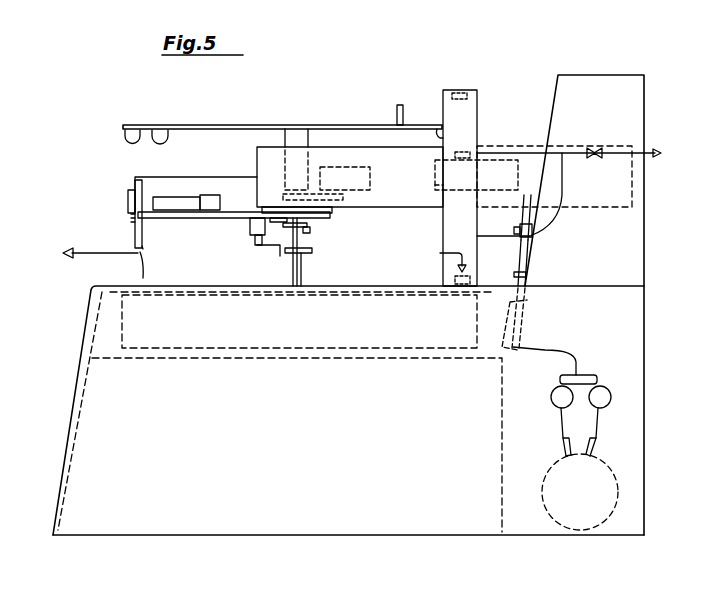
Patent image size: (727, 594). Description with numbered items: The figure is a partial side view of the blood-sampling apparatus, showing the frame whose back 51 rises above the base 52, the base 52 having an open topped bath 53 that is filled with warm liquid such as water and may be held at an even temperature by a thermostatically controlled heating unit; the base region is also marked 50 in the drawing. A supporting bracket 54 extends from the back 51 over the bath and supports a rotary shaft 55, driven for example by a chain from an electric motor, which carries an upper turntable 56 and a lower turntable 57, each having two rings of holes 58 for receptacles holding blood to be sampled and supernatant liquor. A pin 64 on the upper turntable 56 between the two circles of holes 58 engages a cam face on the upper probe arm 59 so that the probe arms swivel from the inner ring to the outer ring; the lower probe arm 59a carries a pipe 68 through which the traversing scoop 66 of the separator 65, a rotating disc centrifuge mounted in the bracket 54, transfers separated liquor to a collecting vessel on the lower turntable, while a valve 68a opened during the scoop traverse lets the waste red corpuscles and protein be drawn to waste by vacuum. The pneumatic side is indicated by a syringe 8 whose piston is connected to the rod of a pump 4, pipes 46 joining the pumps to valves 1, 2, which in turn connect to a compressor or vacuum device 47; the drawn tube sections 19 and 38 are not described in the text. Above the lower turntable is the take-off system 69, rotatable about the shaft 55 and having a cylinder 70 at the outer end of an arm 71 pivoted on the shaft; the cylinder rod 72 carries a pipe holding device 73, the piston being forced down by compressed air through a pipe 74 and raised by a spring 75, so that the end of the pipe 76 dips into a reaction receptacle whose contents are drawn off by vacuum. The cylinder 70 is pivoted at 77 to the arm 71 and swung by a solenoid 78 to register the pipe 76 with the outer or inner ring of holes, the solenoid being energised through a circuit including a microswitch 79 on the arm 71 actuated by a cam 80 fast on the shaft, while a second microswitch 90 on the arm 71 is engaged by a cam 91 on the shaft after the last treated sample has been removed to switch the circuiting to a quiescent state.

The valve 1 is at (551, 395).
The valve 2 is at (611, 393).
The pump 4 is at (522, 318).
The syringe 8 is at (531, 256).
The tube 19 is at (527, 196).
The clamp 38 is at (508, 222).
The pipes 46 is at (548, 357).
The compressor or vacuum device 47 is at (556, 476).
The table 50 is at (197, 450).
The back of the frame 51 is at (636, 265).
The base 52 is at (277, 518).
The open topped bath 53 is at (211, 348).
The supporting bracket 54 is at (389, 186).
The rotary shaft 55 is at (305, 237).
The upper turntable 56 is at (210, 125).
The lower turntable 57 is at (207, 293).
The holes 58 is at (135, 125).
The upper probe arm 59 is at (478, 97).
The lower probe arm 59a is at (447, 288).
The pin 64 is at (397, 112).
The separator 65 is at (440, 186).
The traversing scoop 66 is at (476, 171).
The pipe 68 is at (439, 258).
The valve 68a is at (594, 150).
The take-off system 69 is at (131, 191).
The cylinder 70 is at (143, 240).
The arm 71 is at (232, 219).
The cylinder rod 72 is at (143, 247).
The pipe holding device 73 is at (145, 253).
The pipe 74 is at (215, 177).
The spring 75 is at (134, 222).
The pipe 76 is at (100, 264).
The pivot 77 is at (132, 208).
The solenoid 78 is at (222, 202).
The microswitch 79 is at (255, 246).
The cam 80 is at (312, 227).
The second microswitch 90 is at (291, 256).
The cam 91 is at (303, 255).